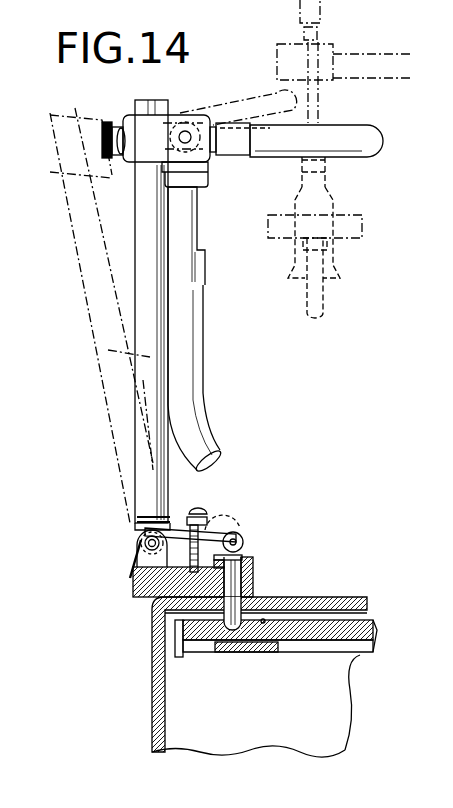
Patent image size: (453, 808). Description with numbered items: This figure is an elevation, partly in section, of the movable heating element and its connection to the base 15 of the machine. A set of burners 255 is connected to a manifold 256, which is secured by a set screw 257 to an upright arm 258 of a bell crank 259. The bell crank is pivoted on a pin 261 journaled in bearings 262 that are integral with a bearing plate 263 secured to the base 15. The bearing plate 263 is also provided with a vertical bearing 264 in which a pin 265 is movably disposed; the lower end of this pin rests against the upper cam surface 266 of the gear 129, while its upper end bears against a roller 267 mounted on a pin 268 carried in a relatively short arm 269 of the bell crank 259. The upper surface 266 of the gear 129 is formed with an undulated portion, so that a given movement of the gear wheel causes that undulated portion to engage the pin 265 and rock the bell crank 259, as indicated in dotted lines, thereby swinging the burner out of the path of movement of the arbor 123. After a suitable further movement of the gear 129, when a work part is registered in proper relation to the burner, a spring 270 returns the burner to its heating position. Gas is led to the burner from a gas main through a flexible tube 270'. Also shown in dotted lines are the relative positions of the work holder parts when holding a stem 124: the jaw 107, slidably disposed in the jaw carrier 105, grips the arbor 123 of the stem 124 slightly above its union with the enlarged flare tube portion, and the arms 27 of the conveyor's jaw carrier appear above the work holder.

The base 15 is at (151, 672).
The arms 27 is at (389, 58).
The jaw carrier 105 is at (363, 238).
The jaw 107 is at (326, 168).
The arbor 123 is at (320, 103).
The stem 124 is at (302, 178).
The gear 129 is at (311, 641).
The burners 255 is at (374, 140).
The manifold 256 is at (200, 158).
The set screw 257 is at (105, 122).
The upright arm 258 is at (163, 340).
The bell crank 259 is at (172, 525).
The pin 261 is at (140, 542).
The bearings 262 is at (146, 530).
The bearing plate 263 is at (140, 588).
The vertical bearing 264 is at (254, 563).
The pin 265 is at (243, 582).
The upper cam surface 266 is at (263, 623).
The roller 267 is at (236, 556).
The pin 268 is at (243, 539).
The short arm 269 is at (222, 514).
The spring 270 is at (100, 559).
The flexible tube 270' is at (217, 379).